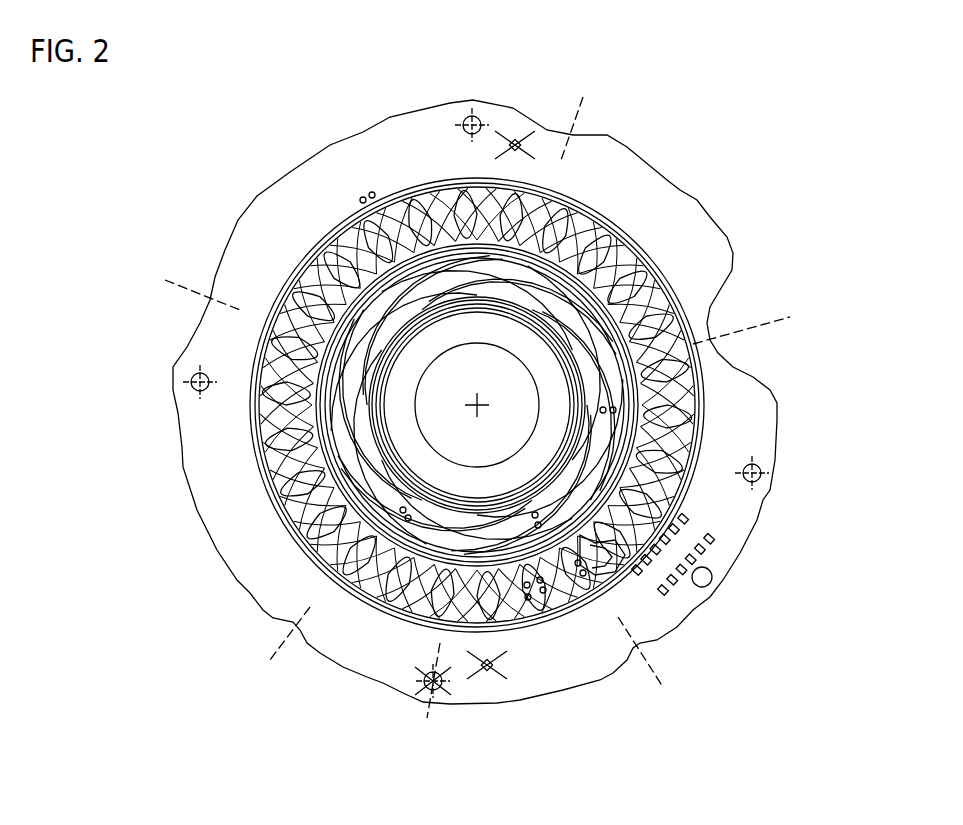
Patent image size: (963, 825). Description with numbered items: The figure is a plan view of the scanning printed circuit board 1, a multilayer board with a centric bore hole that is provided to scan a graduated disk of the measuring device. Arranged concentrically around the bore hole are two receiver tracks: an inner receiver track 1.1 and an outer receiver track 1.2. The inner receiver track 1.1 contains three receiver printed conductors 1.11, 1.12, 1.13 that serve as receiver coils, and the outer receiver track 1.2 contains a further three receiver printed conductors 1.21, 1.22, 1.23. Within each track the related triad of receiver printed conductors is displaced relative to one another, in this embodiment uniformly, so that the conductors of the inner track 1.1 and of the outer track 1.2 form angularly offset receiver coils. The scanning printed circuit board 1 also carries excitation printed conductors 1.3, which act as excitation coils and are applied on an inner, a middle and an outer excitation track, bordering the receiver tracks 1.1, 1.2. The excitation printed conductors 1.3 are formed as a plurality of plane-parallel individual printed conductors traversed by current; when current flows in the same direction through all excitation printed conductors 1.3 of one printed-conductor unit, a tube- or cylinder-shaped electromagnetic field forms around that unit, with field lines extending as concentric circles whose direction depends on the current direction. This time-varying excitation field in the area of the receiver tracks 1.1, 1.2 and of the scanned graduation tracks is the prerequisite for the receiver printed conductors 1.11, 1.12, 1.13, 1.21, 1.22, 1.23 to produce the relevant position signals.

The scanning printed circuit board 1 is at (300, 188).
The inner receiver track 1.1 is at (548, 282).
The receiver printed conductor 1.11 is at (550, 290).
The receiver printed conductor 1.12 is at (584, 315).
The receiver printed conductor 1.13 is at (612, 350).
The outer receiver track 1.2 is at (268, 384).
The receiver printed conductor 1.21 is at (283, 312).
The receiver printed conductor 1.22 is at (278, 292).
The receiver printed conductor 1.23 is at (278, 311).
The excitation printed conductors 1.3 is at (514, 497).